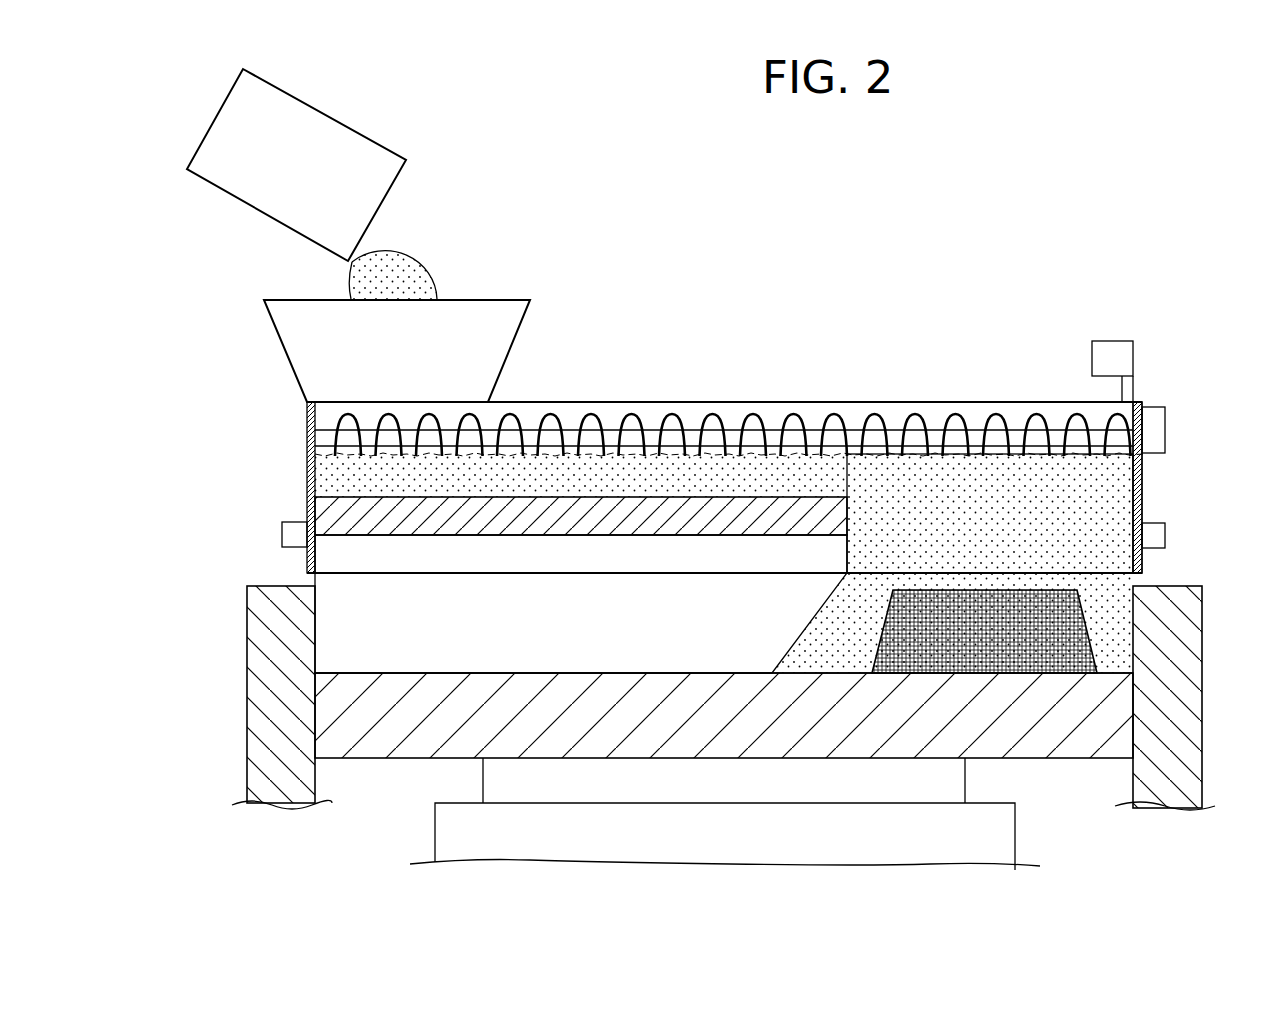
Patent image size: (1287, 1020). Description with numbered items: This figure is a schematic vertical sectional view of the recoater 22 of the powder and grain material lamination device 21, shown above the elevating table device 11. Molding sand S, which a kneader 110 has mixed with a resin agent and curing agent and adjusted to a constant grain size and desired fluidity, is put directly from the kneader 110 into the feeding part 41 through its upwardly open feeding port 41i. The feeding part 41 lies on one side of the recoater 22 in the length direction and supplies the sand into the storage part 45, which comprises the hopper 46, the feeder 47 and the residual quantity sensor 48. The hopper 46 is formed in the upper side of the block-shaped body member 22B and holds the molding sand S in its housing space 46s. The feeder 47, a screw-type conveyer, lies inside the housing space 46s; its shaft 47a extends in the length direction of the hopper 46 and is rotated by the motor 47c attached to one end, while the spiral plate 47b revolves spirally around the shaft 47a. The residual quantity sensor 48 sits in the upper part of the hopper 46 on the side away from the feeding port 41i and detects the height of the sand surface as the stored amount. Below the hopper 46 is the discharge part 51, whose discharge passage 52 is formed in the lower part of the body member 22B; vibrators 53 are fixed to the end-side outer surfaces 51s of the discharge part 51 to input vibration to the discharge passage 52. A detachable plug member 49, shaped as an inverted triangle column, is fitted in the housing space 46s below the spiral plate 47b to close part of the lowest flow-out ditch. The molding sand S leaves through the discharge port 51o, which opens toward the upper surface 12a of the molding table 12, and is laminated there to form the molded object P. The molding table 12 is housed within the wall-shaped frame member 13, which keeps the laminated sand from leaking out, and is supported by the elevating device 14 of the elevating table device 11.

The kneader 110 is at (321, 111).
The molding sand S is at (402, 263).
The feeding part 41 is at (532, 327).
The feeding port 41i is at (483, 290).
The powder and grain material lamination device 21 is at (1030, 307).
The recoater 22 is at (294, 466).
The body member 22B is at (1147, 488).
The storage part 45 is at (252, 416).
The hopper 46 is at (561, 477).
The housing space 46s is at (953, 488).
The feeder 47 is at (724, 390).
The shaft 47a is at (773, 437).
The spiral plate 47b is at (837, 424).
The motor 47c is at (1152, 413).
The residual quantity sensor 48 is at (1113, 350).
The discharge part 51 is at (709, 536).
The end-side outer surfaces 51s is at (315, 498).
The discharge port 51o is at (565, 582).
The discharge passage 52 is at (328, 563).
The vibrators 53 is at (290, 535).
The plug member 49 is at (453, 532).
The elevating table device 11 is at (672, 728).
The frame member 13 is at (253, 700).
The molding table 12 is at (408, 745).
The upper surface 12a is at (378, 690).
The elevating device 14 is at (443, 828).
The molded object P is at (1005, 655).